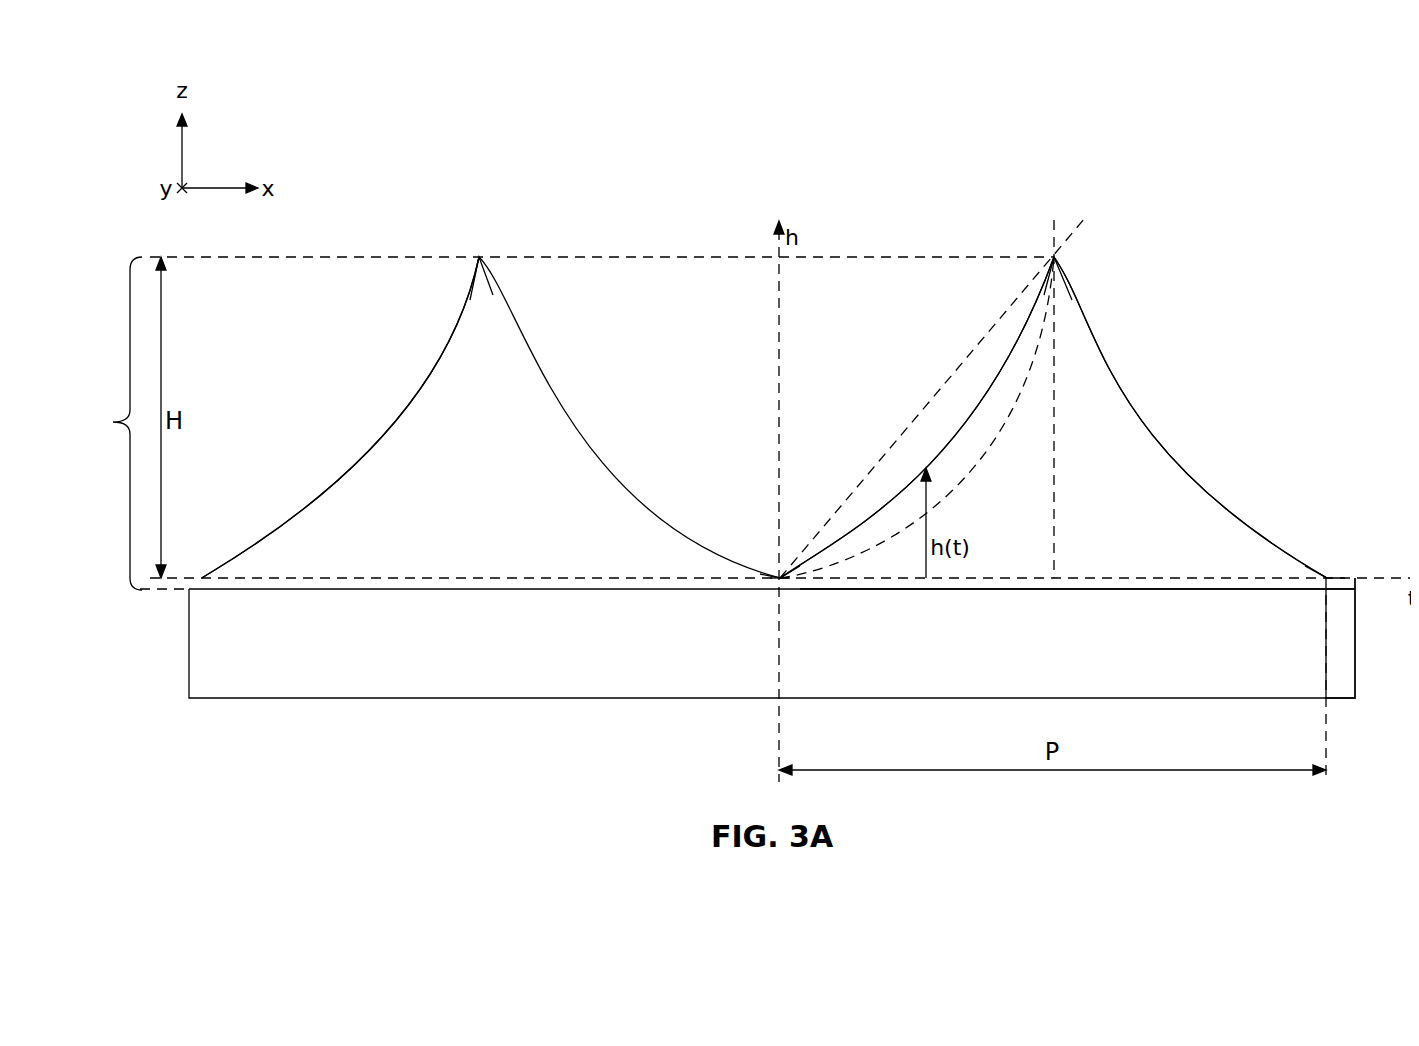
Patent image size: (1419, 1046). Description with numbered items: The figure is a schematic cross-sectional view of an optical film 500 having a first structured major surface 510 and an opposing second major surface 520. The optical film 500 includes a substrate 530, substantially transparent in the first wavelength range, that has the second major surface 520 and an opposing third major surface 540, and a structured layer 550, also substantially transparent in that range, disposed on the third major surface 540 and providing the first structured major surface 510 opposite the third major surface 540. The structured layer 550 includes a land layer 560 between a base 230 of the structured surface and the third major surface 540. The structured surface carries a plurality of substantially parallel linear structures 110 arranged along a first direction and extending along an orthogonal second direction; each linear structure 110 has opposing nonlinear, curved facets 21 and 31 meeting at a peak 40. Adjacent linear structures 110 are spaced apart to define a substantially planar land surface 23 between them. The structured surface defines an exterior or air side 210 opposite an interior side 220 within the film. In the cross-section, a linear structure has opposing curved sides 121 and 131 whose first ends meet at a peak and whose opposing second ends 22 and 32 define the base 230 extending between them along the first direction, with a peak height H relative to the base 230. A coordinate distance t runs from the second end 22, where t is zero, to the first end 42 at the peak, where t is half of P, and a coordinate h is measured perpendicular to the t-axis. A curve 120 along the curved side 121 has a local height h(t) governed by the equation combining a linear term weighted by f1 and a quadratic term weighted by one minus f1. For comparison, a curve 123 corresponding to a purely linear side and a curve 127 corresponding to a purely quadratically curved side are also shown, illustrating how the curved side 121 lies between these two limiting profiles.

The curved facet 21 is at (330, 487).
The second end 22 is at (781, 578).
The land surface 23 is at (776, 578).
The curved facet 31 is at (575, 432).
The second end 32 is at (1327, 578).
The peak 40 is at (479, 257).
The first end 42 is at (1054, 257).
The linear structure 110 is at (415, 393).
The curve 120 is at (951, 437).
The curved side 121 is at (990, 388).
The curve corresponding to a linear side 123 is at (987, 336).
The curve corresponding to a quadratically curved side 127 is at (962, 478).
The curved side 131 is at (1110, 370).
The exterior side 210 is at (628, 246).
The interior side 220 is at (494, 532).
The base 230 is at (1108, 589).
The optical film 500 is at (1254, 211).
The first structured major surface 510 is at (1197, 483).
The second major surface 520 is at (1343, 698).
The substrate 530 is at (200, 643).
The third major surface 540 is at (286, 589).
The structured layer 550 is at (102, 423).
The land layer 560 is at (600, 578).